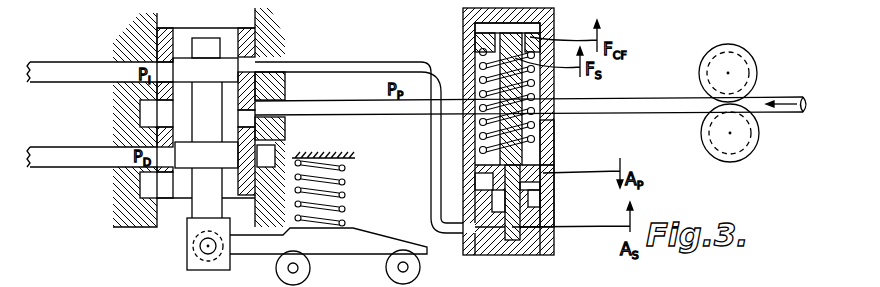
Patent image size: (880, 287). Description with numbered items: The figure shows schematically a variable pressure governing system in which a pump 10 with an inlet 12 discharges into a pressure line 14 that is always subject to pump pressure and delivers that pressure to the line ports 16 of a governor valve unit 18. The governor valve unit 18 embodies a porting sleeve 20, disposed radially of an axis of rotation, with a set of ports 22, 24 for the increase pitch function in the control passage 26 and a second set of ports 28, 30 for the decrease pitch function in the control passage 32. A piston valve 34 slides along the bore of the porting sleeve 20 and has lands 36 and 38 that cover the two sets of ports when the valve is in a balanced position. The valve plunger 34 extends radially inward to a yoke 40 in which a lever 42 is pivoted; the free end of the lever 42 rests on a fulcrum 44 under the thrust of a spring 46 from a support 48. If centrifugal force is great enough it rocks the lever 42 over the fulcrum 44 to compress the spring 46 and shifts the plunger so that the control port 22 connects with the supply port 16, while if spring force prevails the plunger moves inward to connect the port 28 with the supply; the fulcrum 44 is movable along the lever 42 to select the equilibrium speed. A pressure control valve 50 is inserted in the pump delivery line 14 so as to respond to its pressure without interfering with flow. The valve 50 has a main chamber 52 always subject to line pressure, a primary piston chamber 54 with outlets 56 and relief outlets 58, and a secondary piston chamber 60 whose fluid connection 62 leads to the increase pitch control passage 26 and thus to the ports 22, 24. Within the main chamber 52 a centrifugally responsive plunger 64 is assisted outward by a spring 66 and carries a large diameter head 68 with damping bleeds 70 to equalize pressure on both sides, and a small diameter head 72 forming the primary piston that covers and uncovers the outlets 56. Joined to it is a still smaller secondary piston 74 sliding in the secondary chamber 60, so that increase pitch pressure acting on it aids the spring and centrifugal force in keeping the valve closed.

The pump 10 is at (747, 150).
The inlet 12 is at (787, 93).
The pressure line 14 is at (385, 113).
The line ports 16 is at (163, 115).
The governor valve unit 18 is at (313, 50).
The porting sleeve 20 is at (165, 185).
The increase pitch port 22 is at (165, 72).
The increase pitch port 24 is at (258, 65).
The increase pitch control passage 26 is at (67, 72).
The decrease pitch port 28 is at (170, 153).
The decrease pitch port 30 is at (253, 160).
The decrease pitch control passage 32 is at (60, 156).
The piston valve 34 is at (207, 43).
The land 36 is at (187, 67).
The land 38 is at (270, 123).
The yoke 40 is at (190, 263).
The lever 42 is at (260, 250).
The fulcrum 44 is at (418, 272).
The spring 46 is at (343, 208).
The support 48 is at (348, 158).
The pressure control valve 50 is at (460, 15).
The main chamber 52 is at (493, 67).
The primary piston chamber 54 is at (497, 200).
The outlets 56 is at (543, 175).
The outlets 58 is at (552, 202).
The secondary piston chamber 60 is at (512, 237).
The fluid connection 62 is at (358, 67).
The centrifugally responsive plunger 64 is at (537, 132).
The spring 66 is at (540, 142).
The large diameter head 68 is at (533, 33).
The damping bleeds 70 is at (492, 33).
The small diameter head 72 is at (492, 173).
The secondary piston 74 is at (533, 185).